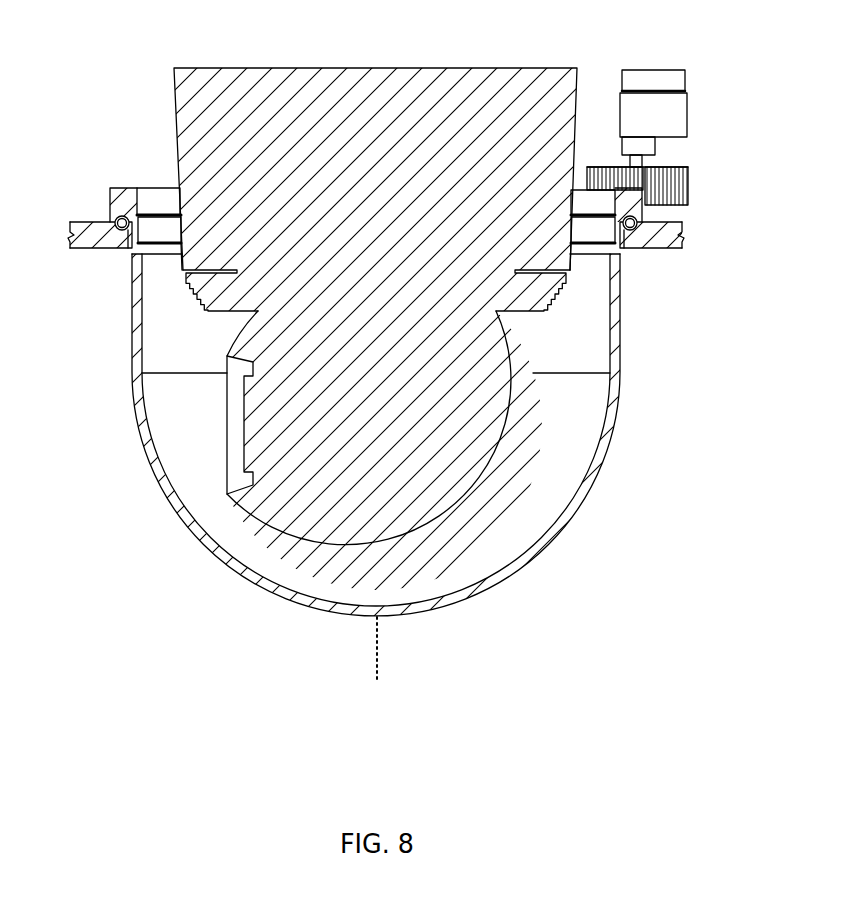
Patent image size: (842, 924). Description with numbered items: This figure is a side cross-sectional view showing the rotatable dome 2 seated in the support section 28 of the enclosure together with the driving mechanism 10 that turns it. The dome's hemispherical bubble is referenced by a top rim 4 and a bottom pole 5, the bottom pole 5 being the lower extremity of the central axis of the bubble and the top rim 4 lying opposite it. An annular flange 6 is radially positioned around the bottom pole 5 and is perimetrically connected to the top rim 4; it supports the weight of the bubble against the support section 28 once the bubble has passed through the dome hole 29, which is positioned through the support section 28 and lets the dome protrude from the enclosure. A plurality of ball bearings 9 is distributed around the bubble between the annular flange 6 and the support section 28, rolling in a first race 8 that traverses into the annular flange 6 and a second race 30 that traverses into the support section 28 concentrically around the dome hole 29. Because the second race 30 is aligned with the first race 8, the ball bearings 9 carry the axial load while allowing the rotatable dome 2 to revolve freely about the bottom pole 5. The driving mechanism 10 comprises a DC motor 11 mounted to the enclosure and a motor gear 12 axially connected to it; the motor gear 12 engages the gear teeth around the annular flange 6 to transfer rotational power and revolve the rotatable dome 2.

The rotatable dome 2 is at (152, 468).
The top rim 4 is at (157, 180).
The bottom pole 5 is at (377, 652).
The annular flange 6 is at (128, 190).
The first race 8 is at (116, 220).
The plurality of ball bearings 9 is at (132, 223).
The driving mechanism 10 is at (704, 163).
The direct current (DC) motor 11 is at (682, 110).
The motor gear 12 is at (684, 190).
The support section 28 is at (83, 243).
The dome hole 29 is at (128, 266).
The second race 30 is at (121, 231).